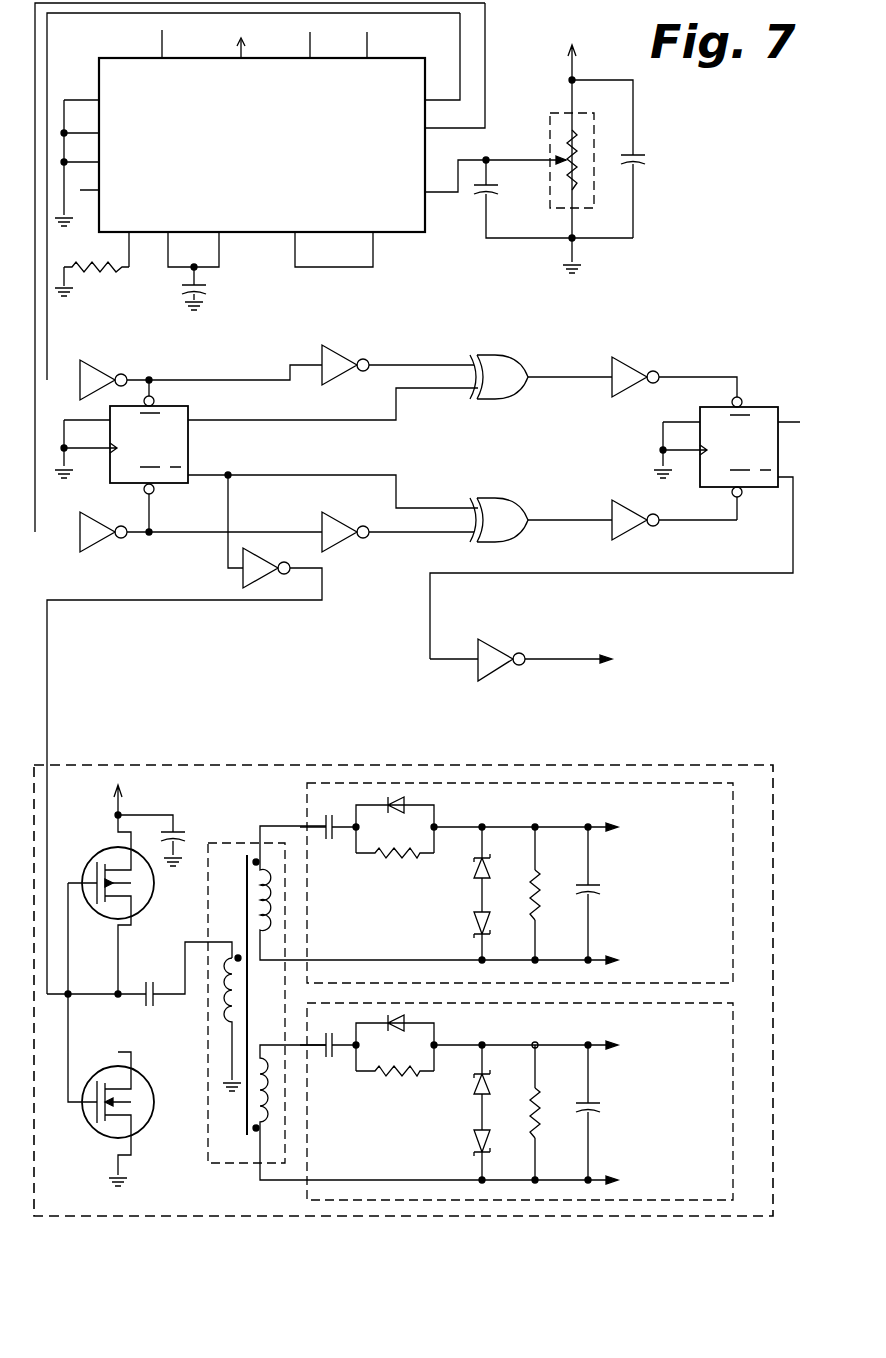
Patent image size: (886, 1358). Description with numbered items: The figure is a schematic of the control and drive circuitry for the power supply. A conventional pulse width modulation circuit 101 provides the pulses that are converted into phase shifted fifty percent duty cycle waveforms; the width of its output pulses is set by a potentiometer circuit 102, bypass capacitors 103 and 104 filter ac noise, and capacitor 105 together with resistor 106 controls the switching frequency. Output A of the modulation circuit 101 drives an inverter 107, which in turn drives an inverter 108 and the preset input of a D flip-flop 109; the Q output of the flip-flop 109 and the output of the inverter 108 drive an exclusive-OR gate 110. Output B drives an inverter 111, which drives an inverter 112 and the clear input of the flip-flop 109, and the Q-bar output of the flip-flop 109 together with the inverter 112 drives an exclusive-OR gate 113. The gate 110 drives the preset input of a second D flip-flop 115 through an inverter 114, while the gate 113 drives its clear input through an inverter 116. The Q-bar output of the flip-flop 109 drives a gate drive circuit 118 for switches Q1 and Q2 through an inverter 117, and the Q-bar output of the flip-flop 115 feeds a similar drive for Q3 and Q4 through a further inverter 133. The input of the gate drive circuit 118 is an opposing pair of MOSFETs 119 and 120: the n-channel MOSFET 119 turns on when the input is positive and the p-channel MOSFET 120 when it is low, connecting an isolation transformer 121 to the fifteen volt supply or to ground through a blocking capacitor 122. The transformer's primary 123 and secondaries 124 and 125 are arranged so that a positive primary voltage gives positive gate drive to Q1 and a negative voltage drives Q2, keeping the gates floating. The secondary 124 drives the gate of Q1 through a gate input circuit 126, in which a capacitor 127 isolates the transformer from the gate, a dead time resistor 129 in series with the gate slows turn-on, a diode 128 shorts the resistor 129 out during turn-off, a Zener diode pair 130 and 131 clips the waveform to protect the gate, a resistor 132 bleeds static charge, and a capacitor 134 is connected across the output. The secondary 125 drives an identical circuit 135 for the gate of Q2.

The pulse width modulation circuit 101 is at (274, 148).
The potentiometer circuit 102 is at (580, 150).
The bypass capacitor 103 is at (642, 156).
The bypass capacitor 104 is at (478, 192).
The capacitor 105 is at (208, 280).
The resistor 106 is at (104, 272).
The inverter 107 is at (104, 366).
The inverter 108 is at (348, 356).
The D flip-flop 109 is at (190, 447).
The exclusive-OR gate 110 is at (508, 356).
The inverter 111 is at (96, 548).
The inverter 112 is at (322, 540).
The exclusive-OR gate 113 is at (512, 510).
The inverter 114 is at (637, 360).
The second D flip-flop 115 is at (700, 404).
The inverter 116 is at (624, 500).
The inverter 117 is at (243, 575).
The gate drive circuit 118 is at (238, 795).
The n-channel MOSFET 119 is at (100, 855).
The p-channel MOSFET 120 is at (94, 1130).
The isolation transformer 121 is at (240, 1135).
The blocking capacitor 122 is at (150, 985).
The primary 123 is at (224, 1020).
The secondary 124 is at (255, 905).
The secondary 125 is at (262, 1045).
The gate input circuit 126 is at (406, 905).
The capacitor 127 is at (334, 838).
The diode 128 is at (408, 805).
The dead time resistor 129 is at (400, 856).
The Zener diode 130 is at (478, 862).
The Zener diode 131 is at (478, 928).
The resistor 132 is at (540, 882).
The inverter 133 is at (496, 640).
The capacitor 134 is at (598, 888).
The circuit 135 is at (414, 1133).